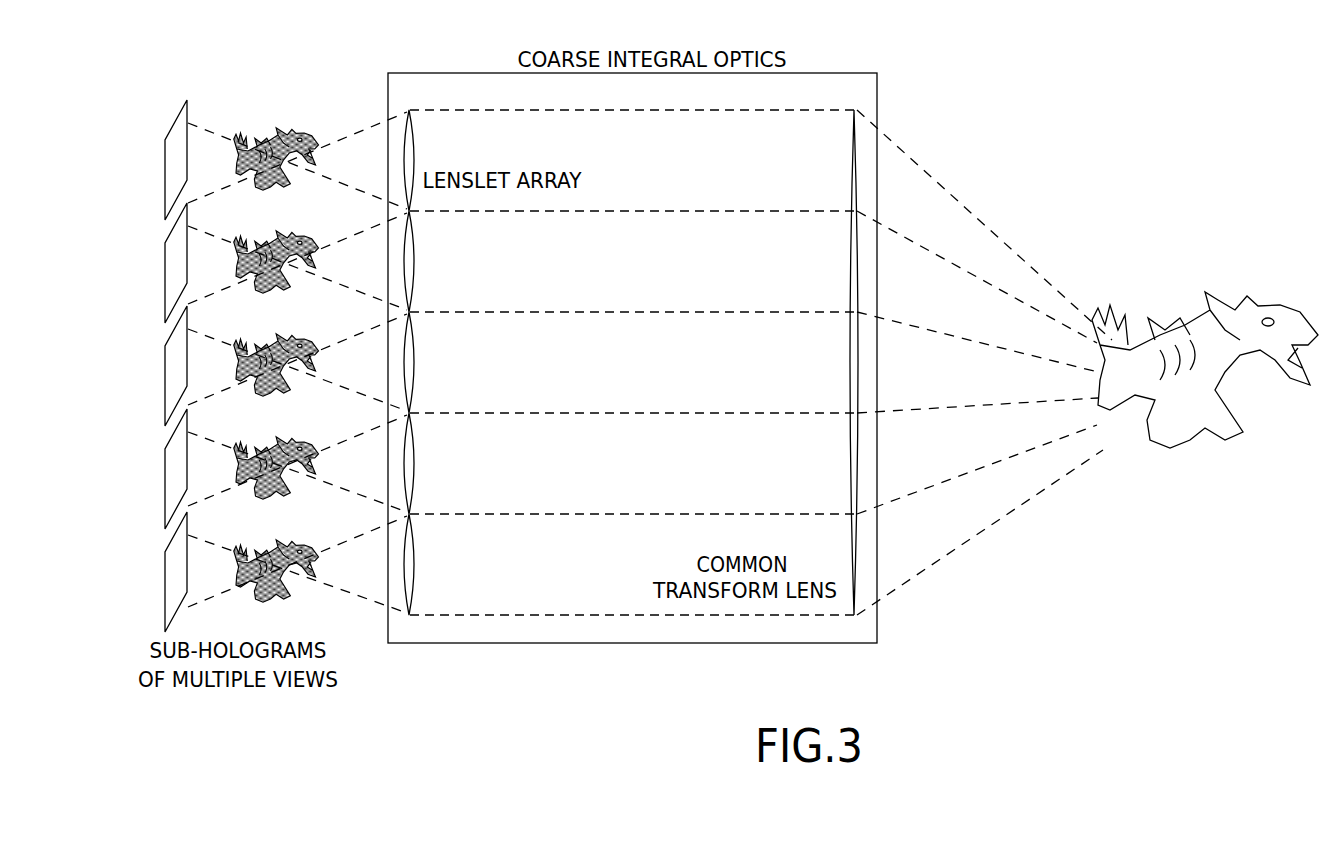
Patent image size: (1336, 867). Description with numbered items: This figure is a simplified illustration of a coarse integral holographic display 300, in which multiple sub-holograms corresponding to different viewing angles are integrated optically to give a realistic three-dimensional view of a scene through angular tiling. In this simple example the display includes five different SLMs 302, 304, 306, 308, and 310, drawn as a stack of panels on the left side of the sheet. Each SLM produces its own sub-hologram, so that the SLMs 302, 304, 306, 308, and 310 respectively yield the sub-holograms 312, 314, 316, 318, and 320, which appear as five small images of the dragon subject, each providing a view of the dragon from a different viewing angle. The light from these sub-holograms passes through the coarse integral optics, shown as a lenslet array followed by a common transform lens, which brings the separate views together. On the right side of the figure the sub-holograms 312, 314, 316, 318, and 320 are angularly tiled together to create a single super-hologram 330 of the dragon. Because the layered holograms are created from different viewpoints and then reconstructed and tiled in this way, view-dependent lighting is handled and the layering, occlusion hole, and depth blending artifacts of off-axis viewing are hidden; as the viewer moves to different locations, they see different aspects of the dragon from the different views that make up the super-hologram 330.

The coarse integral holographic display 300 is at (932, 84).
The SLM 302 is at (163, 172).
The SLM 304 is at (163, 275).
The SLM 306 is at (163, 378).
The SLM 308 is at (163, 481).
The SLM 310 is at (163, 584).
The sub-hologram 312 is at (298, 120).
The sub-hologram 314 is at (300, 226).
The sub-hologram 316 is at (305, 328).
The sub-hologram 318 is at (300, 429).
The sub-hologram 320 is at (316, 533).
The super-hologram 330 is at (1174, 252).